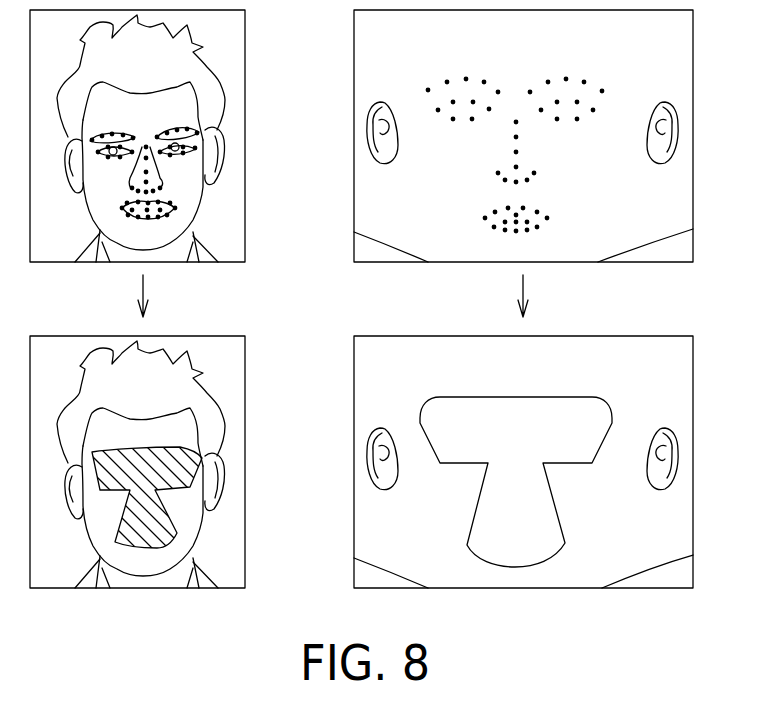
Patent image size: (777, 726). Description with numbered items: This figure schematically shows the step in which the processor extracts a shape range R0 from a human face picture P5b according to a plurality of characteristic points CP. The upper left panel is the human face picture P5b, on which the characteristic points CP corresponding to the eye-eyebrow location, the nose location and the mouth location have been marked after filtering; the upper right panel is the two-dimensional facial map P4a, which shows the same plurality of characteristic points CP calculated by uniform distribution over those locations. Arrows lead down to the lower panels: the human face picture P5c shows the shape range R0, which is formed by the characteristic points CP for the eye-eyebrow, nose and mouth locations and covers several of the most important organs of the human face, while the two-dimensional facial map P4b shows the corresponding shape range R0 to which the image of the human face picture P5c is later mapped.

The characteristic points CP is at (190, 125).
The shape range R0 is at (173, 509).
The human face picture P5b is at (78, 39).
The 2D facial map P4a is at (407, 40).
The human face picture P5c is at (76, 365).
The 2D facial map P4b is at (407, 368).